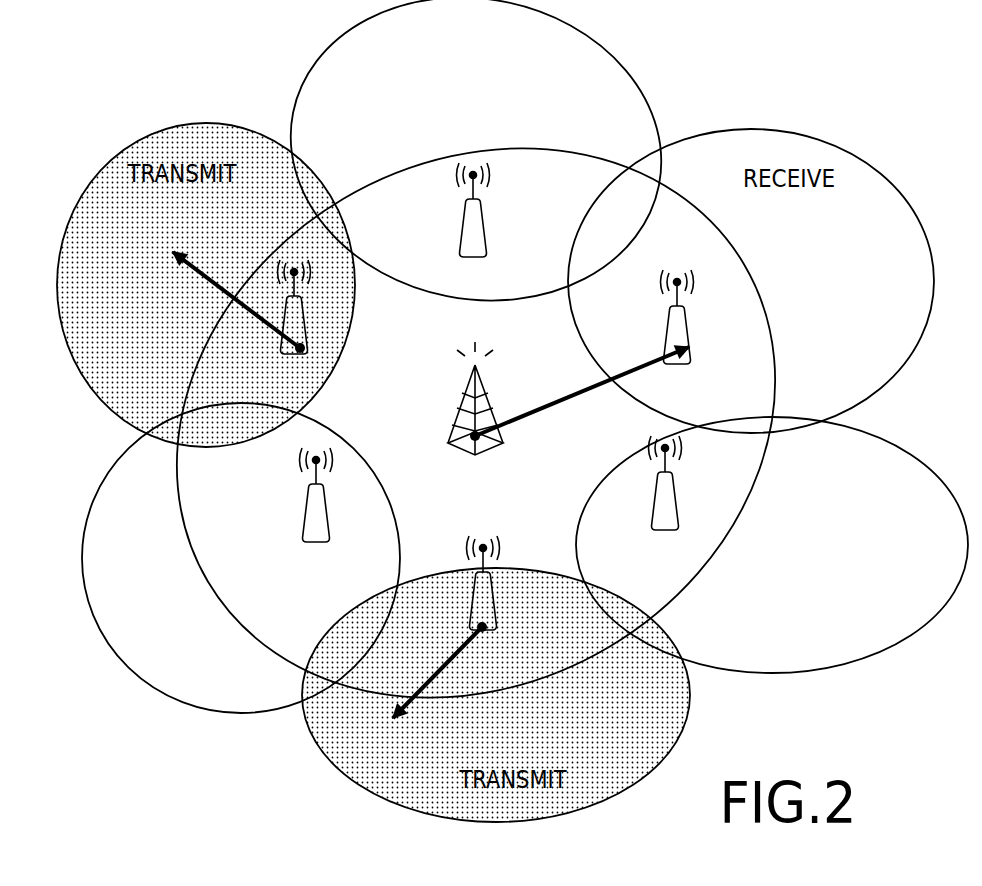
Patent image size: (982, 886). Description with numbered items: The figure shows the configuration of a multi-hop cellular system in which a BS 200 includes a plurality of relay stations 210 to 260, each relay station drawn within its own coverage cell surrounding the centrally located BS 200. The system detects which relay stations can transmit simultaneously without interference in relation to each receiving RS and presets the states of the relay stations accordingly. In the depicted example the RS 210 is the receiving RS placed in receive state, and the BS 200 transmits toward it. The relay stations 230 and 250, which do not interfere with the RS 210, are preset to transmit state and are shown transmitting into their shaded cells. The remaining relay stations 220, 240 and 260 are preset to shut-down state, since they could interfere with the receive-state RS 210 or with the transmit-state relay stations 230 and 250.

The BS 200 is at (563, 415).
The RS 210 is at (700, 332).
The relay station 220 is at (688, 499).
The relay station 230 is at (458, 627).
The relay station 240 is at (318, 509).
The relay station 250 is at (245, 319).
The relay station 260 is at (491, 226).